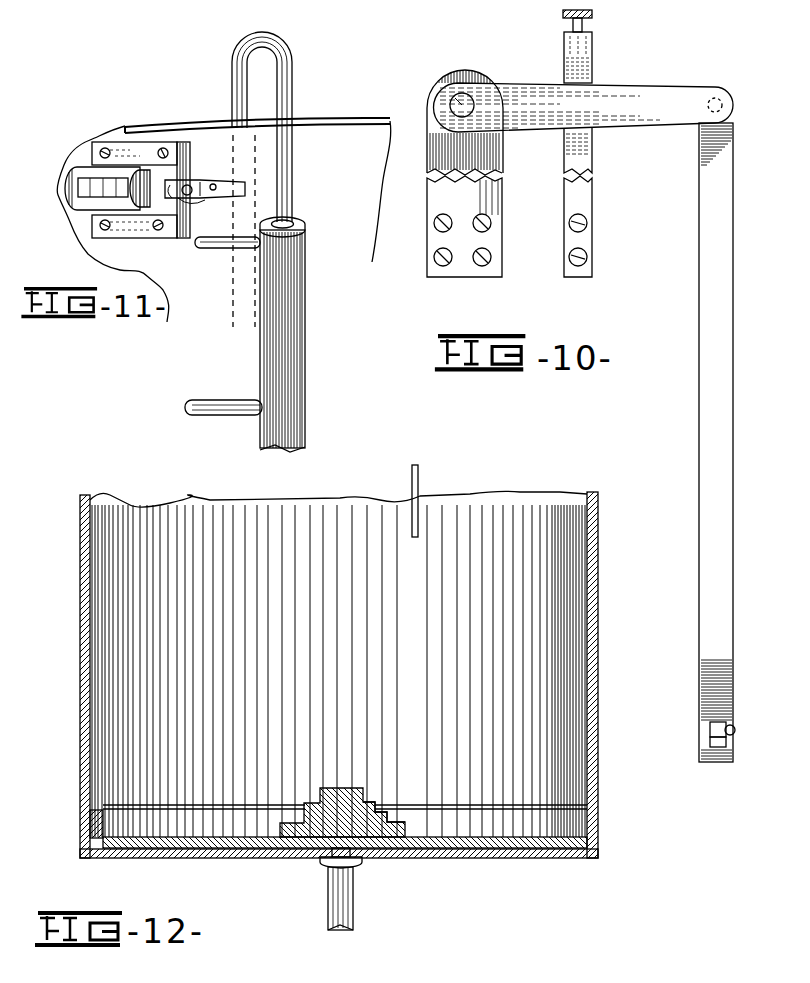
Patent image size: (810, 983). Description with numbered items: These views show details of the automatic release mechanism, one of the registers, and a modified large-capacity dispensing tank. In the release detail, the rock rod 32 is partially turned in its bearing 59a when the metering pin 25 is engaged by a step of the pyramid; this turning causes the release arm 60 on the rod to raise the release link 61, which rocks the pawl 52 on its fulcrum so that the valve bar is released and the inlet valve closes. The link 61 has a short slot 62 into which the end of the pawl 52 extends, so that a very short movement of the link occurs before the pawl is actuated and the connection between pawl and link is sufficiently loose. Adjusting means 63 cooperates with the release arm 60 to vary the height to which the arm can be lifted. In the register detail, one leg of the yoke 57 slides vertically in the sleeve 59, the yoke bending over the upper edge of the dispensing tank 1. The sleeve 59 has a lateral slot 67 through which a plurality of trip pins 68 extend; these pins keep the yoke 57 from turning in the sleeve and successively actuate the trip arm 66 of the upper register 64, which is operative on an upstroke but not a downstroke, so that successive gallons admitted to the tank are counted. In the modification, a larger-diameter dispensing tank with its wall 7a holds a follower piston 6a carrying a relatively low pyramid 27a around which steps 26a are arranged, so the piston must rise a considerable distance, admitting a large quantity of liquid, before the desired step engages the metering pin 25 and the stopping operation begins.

In FIG. 11, the dispensing tank 1 is at (330, 127).
In FIG. 11, the yoke 57 is at (292, 62).
In FIG. 11, the sleeve 59 is at (305, 268).
In FIG. 11, the lateral slot 67 is at (262, 224).
In FIG. 11, the trip pins 68 is at (208, 249).
In FIG. 11, the upper register 64 is at (67, 205).
In FIG. 11, the trip arm 66 is at (212, 177).
In FIG. 10, the bearing 59a is at (502, 200).
In FIG. 10, the adjusting means 63 is at (563, 38).
In FIG. 10, the release arm 60 is at (652, 92).
In FIG. 10, the rock rod 32 is at (437, 98).
In FIG. 10, the release link 61 is at (702, 240).
In FIG. 10, the pawl 52 is at (709, 728).
In FIG. 10, the short slot 62 is at (709, 742).
In FIG. 12, the cylinder wall 7a is at (597, 665).
In FIG. 12, the follower piston 6a is at (215, 850).
In FIG. 12, the pyramid 27a is at (337, 788).
In FIG. 12, the steps 26a is at (370, 802).
In FIG. 12, the metering pin 25 is at (418, 488).